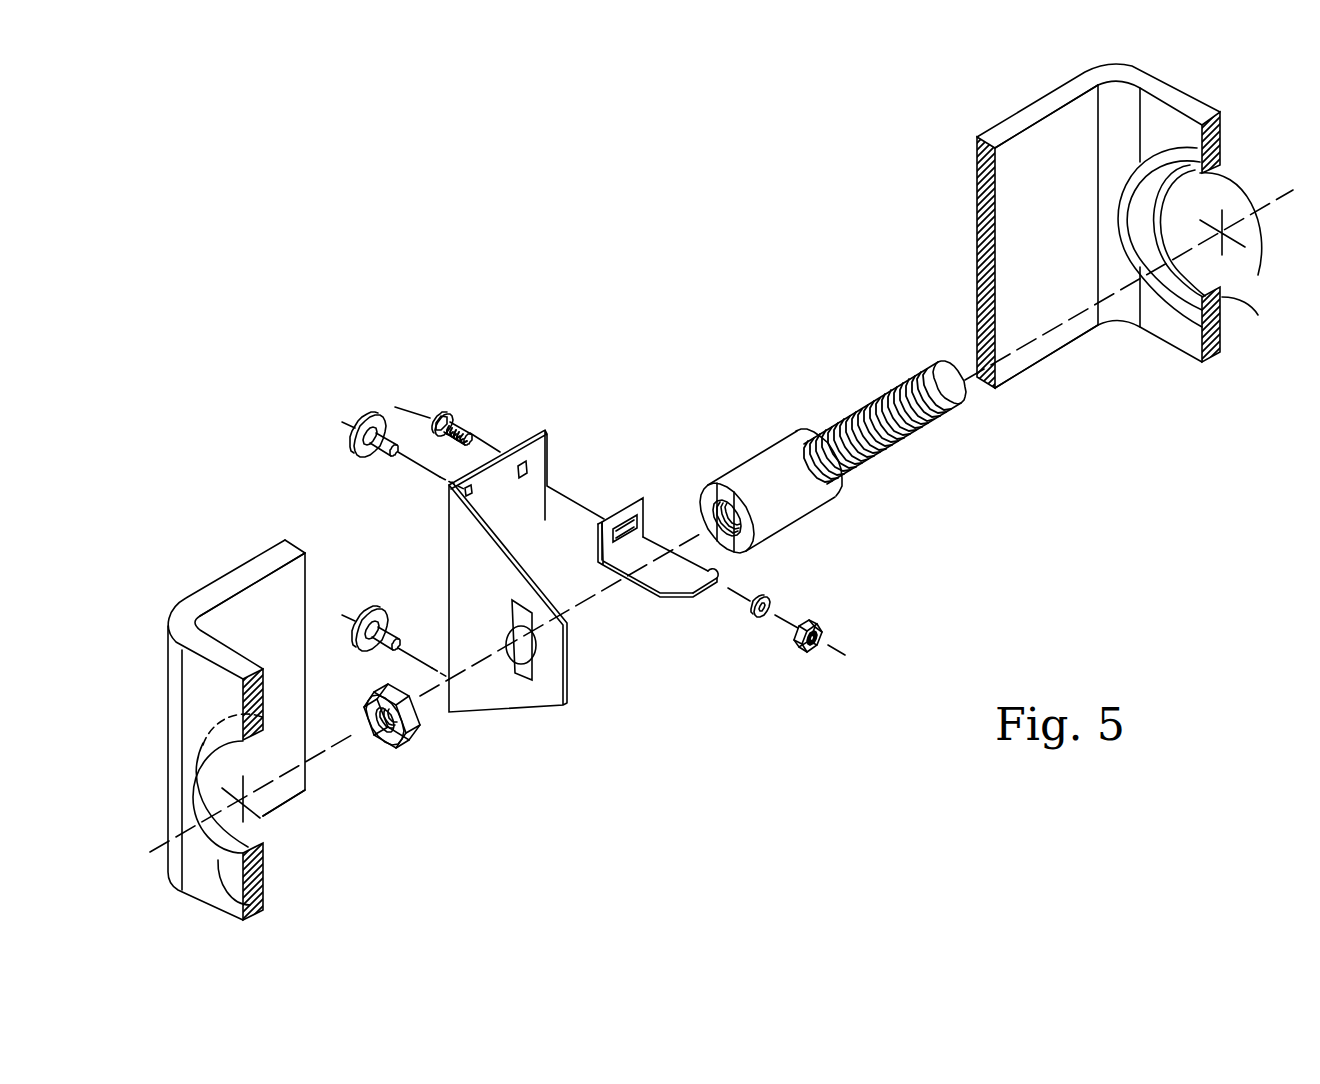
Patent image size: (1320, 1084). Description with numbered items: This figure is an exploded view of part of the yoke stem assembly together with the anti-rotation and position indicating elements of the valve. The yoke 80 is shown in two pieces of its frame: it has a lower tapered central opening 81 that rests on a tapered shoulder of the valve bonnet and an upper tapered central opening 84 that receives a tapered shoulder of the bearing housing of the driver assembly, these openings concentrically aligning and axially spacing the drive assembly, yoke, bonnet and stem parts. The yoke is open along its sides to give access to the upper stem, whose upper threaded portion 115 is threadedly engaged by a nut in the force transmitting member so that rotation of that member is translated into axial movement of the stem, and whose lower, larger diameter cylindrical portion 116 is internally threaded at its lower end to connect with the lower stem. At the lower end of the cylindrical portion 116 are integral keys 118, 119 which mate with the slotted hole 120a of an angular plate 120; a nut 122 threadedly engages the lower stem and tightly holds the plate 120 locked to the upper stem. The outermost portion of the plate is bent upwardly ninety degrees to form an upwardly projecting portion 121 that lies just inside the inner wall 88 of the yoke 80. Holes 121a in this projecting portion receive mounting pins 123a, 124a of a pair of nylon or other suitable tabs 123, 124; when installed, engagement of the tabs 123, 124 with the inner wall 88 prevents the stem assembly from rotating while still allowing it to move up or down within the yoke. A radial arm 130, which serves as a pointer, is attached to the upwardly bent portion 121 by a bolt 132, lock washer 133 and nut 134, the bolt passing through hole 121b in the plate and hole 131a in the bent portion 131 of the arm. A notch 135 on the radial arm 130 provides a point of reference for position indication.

The yoke 80 is at (717, 492).
The lower tapered central opening 81 is at (263, 887).
The upper tapered central opening 84 is at (1220, 292).
The inner wall 88 is at (292, 627).
The upper threaded portion 115 is at (912, 440).
The lower larger diameter cylindrical portion 116 is at (807, 473).
The integral key 118 is at (724, 485).
The integral key 119 is at (735, 556).
The angular plate 120 is at (517, 585).
The slotted hole 120a is at (533, 652).
The upwardly projecting portion 121 is at (485, 468).
The holes 121a is at (466, 491).
The hole 121b is at (522, 458).
The nut 122 is at (418, 718).
The tab 123 is at (336, 419).
The mounting pin 123a is at (383, 460).
The tab 124 is at (359, 627).
The mounting pin 124a is at (352, 656).
The radial arm 130 is at (676, 555).
The bent portion 131 is at (636, 494).
The hole 131a is at (602, 505).
The bolt 132 is at (444, 407).
The lock washer 133 is at (770, 598).
The nut 134 is at (822, 624).
The notch 135 is at (725, 572).